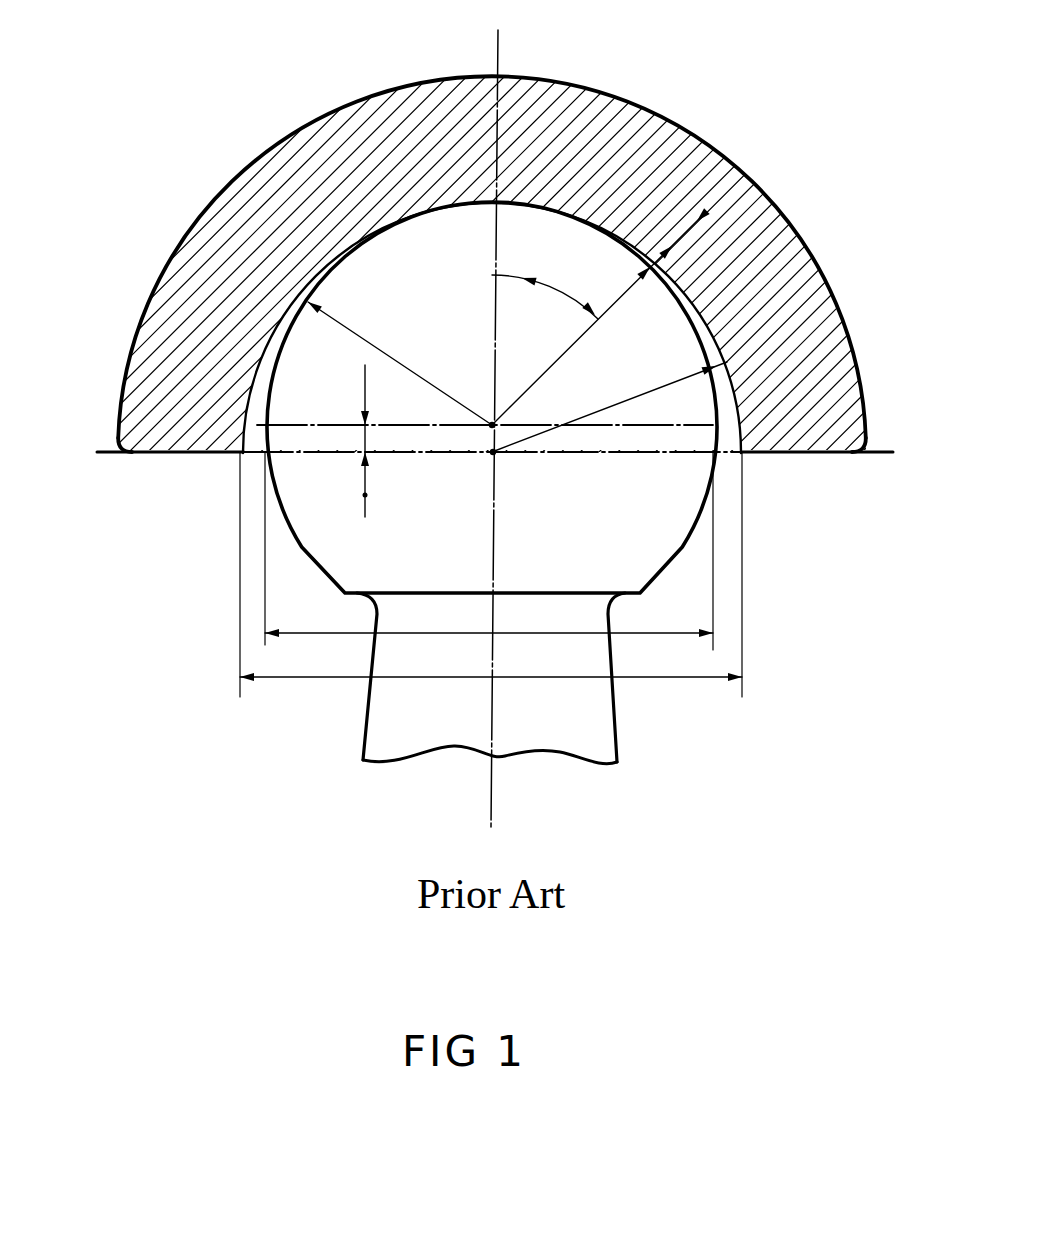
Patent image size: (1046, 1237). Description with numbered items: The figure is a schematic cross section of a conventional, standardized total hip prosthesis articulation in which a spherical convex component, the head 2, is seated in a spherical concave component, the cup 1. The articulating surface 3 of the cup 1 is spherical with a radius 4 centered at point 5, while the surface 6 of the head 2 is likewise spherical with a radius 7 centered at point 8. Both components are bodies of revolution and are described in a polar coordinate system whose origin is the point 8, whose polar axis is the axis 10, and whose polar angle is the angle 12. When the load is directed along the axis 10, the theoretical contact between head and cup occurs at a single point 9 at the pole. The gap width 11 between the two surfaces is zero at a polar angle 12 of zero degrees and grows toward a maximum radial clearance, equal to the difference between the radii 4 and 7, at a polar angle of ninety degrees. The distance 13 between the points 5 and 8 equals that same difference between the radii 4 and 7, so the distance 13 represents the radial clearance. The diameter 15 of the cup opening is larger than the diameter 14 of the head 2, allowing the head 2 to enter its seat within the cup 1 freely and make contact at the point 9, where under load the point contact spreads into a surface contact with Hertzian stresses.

The cup 1 is at (408, 108).
The head 2 is at (293, 493).
The articulating surface 3 is at (724, 358).
The radius 4 is at (597, 412).
The point 5 is at (495, 455).
The surface 6 is at (268, 364).
The radius 7 is at (392, 358).
The point 8 is at (492, 427).
The point 9 is at (490, 213).
The axis 10 is at (498, 42).
The gap width 11 is at (700, 221).
The polar angle 12 is at (585, 270).
The distance 13 is at (365, 495).
The diameter 14 is at (347, 632).
The diameter 15 is at (347, 680).